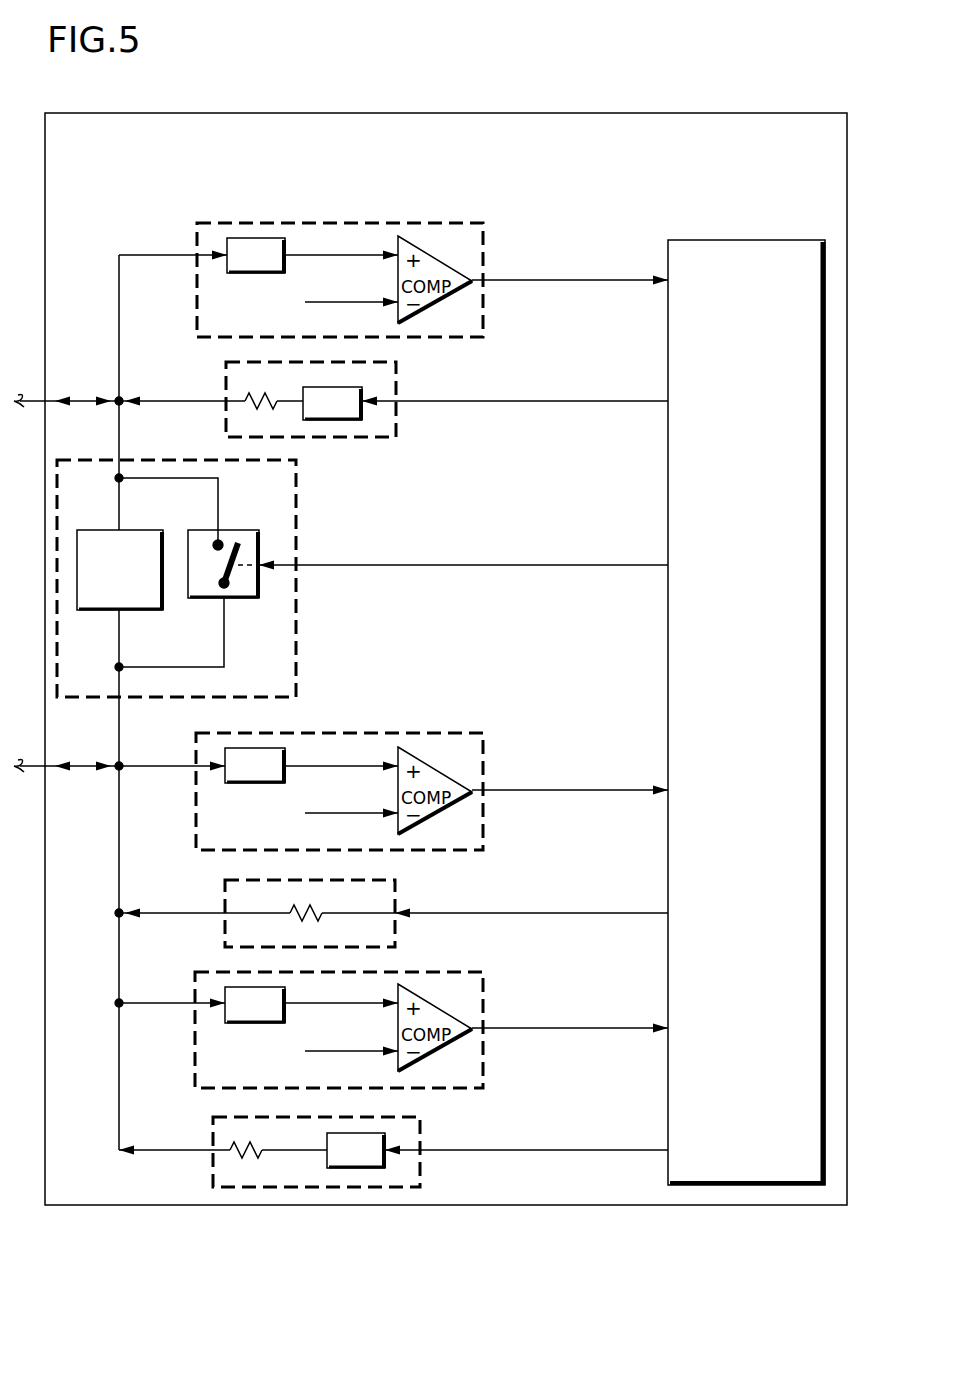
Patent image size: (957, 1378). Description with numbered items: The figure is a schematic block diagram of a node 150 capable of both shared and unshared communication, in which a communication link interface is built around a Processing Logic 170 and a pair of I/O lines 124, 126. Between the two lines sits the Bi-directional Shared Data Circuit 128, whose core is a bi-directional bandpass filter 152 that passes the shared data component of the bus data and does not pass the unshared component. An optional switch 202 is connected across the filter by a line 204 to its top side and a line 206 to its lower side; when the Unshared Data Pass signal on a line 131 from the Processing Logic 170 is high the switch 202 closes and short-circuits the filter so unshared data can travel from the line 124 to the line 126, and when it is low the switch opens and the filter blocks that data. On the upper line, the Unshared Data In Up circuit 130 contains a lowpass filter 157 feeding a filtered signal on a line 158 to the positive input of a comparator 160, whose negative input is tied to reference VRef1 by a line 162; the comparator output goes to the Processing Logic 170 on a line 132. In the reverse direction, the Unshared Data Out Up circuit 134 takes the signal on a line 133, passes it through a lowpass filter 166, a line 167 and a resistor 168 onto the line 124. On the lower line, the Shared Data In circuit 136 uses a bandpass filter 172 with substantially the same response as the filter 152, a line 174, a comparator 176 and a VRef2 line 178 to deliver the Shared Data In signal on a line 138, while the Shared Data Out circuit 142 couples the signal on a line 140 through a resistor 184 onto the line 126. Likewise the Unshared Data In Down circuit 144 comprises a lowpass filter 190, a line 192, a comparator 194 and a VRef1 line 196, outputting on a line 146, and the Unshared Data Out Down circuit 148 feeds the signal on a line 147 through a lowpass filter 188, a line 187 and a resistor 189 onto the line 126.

The node 150 is at (73, 182).
The processing logic 170 is at (720, 571).
The I/O line 124 is at (119, 253).
The I/O line 126 is at (27, 764).
The Unshared Data In Up circuit 130 is at (492, 222).
The lowpass filter 157 is at (288, 250).
The line 158 is at (357, 259).
The comparator 160 is at (422, 249).
The line 162 is at (358, 306).
The line 132 is at (541, 283).
The Unshared Data Out Up circuit 134 is at (410, 380).
The lowpass filter 166 is at (316, 386).
The line 167 is at (287, 398).
The resistor 168 is at (240, 407).
The line 133 is at (550, 404).
The Bi-directional Shared Data Circuit 128 is at (310, 491).
The bi-directional bandpass filter 152 is at (116, 528).
The switch 202 is at (232, 528).
The line 204 is at (158, 483).
The line 206 is at (158, 669).
The line 131 is at (488, 568).
The Shared Data In circuit 136 is at (492, 731).
The bandpass filter 172 is at (288, 760).
The line 174 is at (362, 769).
The comparator 176 is at (422, 759).
The line 178 is at (362, 816).
The line 138 is at (570, 792).
The Shared Data Out circuit 142 is at (410, 890).
The resistor 184 is at (303, 910).
The line 140 is at (560, 916).
The Unshared Data In Down circuit 144 is at (492, 971).
The lowpass filter 190 is at (288, 998).
The line 192 is at (362, 1006).
The comparator 194 is at (422, 998).
The line 196 is at (362, 1055).
The line 146 is at (558, 1031).
The Unshared Data Out Down circuit 148 is at (435, 1187).
The lowpass filter 188 is at (335, 1133).
The resistor 189 is at (262, 1155).
The line 187 is at (280, 1153).
The line 147 is at (560, 1153).